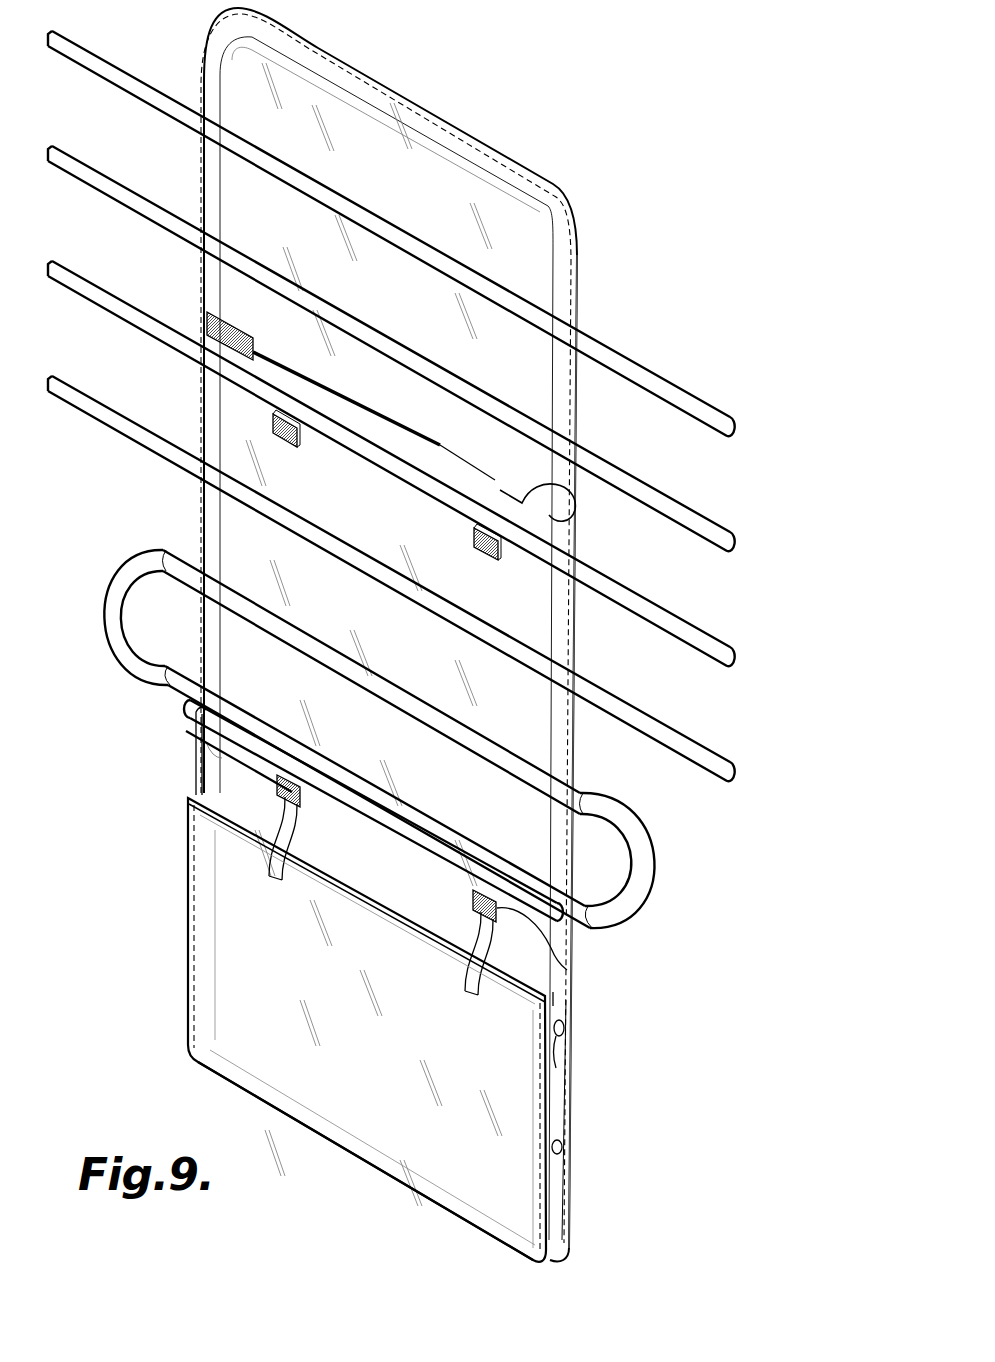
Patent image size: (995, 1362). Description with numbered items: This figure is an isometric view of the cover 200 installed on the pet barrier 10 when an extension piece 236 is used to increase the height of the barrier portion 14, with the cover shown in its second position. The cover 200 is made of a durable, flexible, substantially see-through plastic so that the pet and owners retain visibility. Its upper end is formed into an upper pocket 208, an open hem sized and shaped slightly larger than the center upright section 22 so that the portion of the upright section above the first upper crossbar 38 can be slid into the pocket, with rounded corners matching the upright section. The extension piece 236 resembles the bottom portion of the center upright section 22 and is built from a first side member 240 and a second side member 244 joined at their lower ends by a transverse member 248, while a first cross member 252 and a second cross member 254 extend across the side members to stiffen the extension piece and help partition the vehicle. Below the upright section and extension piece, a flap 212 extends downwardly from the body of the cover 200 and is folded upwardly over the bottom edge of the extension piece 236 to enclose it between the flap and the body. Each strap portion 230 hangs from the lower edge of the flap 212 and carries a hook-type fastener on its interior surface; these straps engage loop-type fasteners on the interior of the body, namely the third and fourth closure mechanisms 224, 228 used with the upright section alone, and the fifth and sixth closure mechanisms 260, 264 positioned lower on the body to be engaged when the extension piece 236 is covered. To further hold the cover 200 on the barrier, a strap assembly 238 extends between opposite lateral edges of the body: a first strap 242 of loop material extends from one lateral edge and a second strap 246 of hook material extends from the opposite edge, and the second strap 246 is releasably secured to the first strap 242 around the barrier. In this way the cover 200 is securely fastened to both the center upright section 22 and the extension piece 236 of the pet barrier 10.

The pet barrier 10 is at (630, 148).
The barrier portion 14 is at (678, 362).
The center upright section 22 is at (580, 311).
The first upper crossbar 38 is at (727, 412).
The cover 200 is at (574, 1242).
The upper pocket 208 is at (510, 215).
The flap 212 is at (520, 1182).
The third closure mechanism 224 is at (274, 422).
The fourth closure mechanism 228 is at (500, 556).
The strap portion 230 is at (283, 822).
The extension piece 236 is at (567, 1022).
The strap assembly 238 is at (517, 482).
The first side member 240 is at (196, 767).
The first strap 242 is at (215, 330).
The second side member 244 is at (562, 1007).
The second strap 246 is at (570, 502).
The transverse member 248 is at (435, 1188).
The first cross member 252 is at (563, 1078).
The second cross member 254 is at (561, 1153).
The fifth closure mechanism 260 is at (193, 738).
The sixth closure mechanism 264 is at (551, 948).